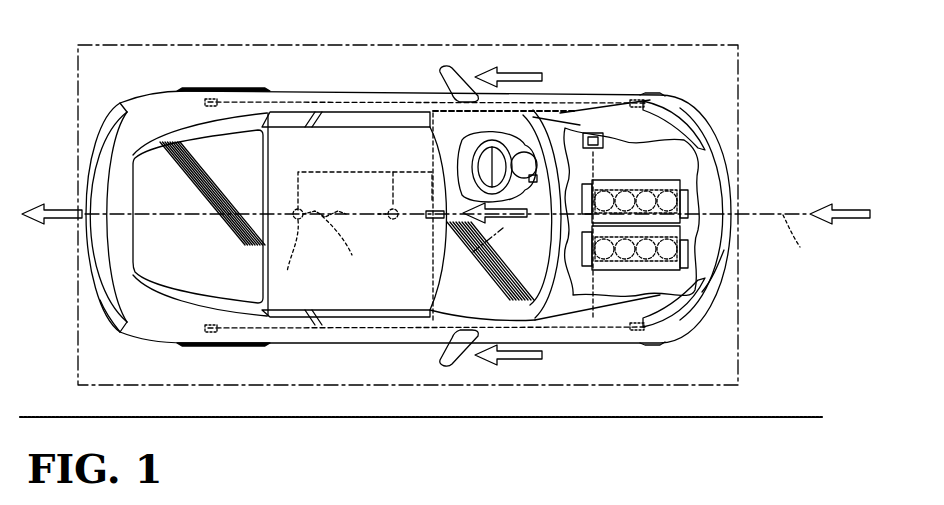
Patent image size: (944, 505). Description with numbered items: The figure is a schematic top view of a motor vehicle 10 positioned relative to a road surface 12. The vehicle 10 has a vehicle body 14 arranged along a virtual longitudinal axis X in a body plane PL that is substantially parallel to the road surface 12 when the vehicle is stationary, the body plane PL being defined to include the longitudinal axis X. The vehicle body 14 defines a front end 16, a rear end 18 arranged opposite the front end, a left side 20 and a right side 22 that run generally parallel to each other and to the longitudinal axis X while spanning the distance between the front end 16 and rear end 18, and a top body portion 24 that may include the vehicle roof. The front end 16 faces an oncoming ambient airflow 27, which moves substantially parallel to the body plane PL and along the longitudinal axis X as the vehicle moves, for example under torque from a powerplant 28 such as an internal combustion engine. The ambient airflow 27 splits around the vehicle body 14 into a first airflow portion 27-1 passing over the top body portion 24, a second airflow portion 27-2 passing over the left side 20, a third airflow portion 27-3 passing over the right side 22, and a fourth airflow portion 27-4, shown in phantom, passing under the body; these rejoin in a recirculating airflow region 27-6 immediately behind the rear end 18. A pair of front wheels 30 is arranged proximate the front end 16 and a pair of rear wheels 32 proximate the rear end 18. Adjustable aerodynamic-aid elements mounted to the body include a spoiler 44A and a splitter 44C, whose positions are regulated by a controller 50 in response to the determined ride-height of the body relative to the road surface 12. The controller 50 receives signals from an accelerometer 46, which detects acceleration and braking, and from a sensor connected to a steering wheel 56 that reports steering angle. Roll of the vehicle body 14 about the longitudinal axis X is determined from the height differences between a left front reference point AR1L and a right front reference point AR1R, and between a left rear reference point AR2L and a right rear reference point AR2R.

The motor vehicle 10 is at (740, 388).
The road surface 12 is at (428, 410).
The vehicle body 14 is at (368, 153).
The front end 16 is at (710, 170).
The rear end 18 is at (88, 193).
The left side 20 is at (425, 97).
The right side 22 is at (415, 340).
The top body portion 24 is at (375, 221).
The ambient airflow 27 is at (845, 208).
The first airflow portion 27-1 is at (470, 256).
The second airflow portion 27-2 is at (520, 67).
The third airflow portion 27-3 is at (518, 363).
The fourth airflow portion 27-4 is at (344, 248).
The recirculating airflow region 27-6 is at (63, 220).
The powerplant 28 is at (673, 177).
The front wheels 30 is at (652, 93).
The rear wheels 32 is at (190, 88).
The spoiler 44A is at (105, 282).
The splitter 44C is at (730, 255).
The accelerometer 46 is at (288, 257).
The controller 50 is at (593, 131).
The steering wheel 56 is at (473, 165).
The left front reference point AR1L is at (682, 110).
The right front reference point AR1R is at (682, 322).
The left rear reference point AR2L is at (120, 105).
The right rear reference point AR2R is at (120, 332).
The body plane PL is at (200, 387).
The longitudinal axis X is at (791, 241).